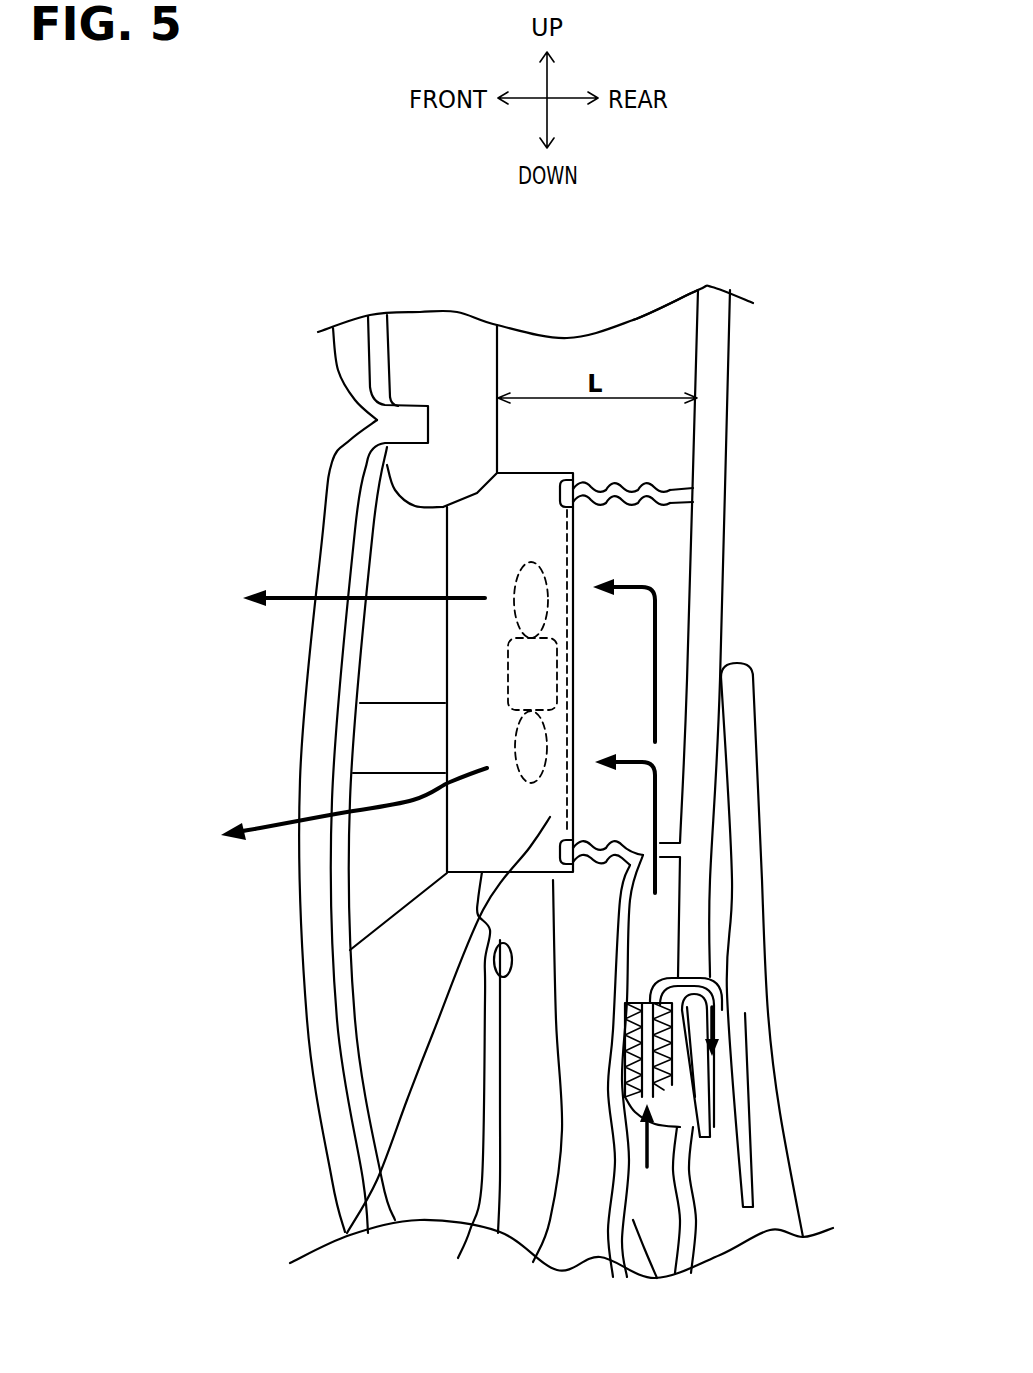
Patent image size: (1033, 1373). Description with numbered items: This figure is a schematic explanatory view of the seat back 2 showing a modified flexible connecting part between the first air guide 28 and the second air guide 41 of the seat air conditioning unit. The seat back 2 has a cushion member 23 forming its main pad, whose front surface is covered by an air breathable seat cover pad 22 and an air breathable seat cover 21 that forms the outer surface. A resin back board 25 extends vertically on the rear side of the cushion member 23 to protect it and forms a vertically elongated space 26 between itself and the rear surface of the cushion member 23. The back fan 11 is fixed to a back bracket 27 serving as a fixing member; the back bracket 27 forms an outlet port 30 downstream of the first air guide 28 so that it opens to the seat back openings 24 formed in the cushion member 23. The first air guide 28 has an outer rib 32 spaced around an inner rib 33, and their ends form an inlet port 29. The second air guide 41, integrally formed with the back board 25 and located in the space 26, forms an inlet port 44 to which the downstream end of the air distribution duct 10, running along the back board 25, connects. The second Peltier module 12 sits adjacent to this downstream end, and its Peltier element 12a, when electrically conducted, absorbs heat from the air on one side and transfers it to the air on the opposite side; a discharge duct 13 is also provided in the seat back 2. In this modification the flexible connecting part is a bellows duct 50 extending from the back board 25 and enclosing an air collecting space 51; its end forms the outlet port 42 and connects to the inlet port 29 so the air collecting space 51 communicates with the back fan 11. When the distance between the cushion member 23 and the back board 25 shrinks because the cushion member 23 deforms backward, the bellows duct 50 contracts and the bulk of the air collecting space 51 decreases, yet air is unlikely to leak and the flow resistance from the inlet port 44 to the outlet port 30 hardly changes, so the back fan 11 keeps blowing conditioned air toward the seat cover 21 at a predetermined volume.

The seat back 2 is at (440, 305).
The air distribution duct 10 is at (650, 1280).
The back fan 11 is at (513, 572).
The second Peltier module 12 is at (672, 1072).
The Peltier element 12a is at (673, 1125).
The discharge duct 13 is at (723, 995).
The seat cover 21 is at (330, 467).
The seat cover pad 22 is at (337, 1138).
The cushion member 23 is at (407, 328).
The seat back openings 24 is at (410, 522).
The back board 25 is at (730, 352).
The space 26 is at (630, 363).
The back bracket 27 is at (372, 1167).
The first air guide 28 is at (510, 818).
The inlet port 29 is at (573, 662).
The outlet port 30 is at (443, 617).
The outer rib 32 is at (533, 1262).
The inner rib 33 is at (458, 1258).
The second air guide 41 is at (693, 487).
The outlet port 42 is at (580, 618).
The inlet port 44 is at (658, 843).
The bellows duct 50 is at (637, 487).
The air collecting space 51 is at (655, 563).